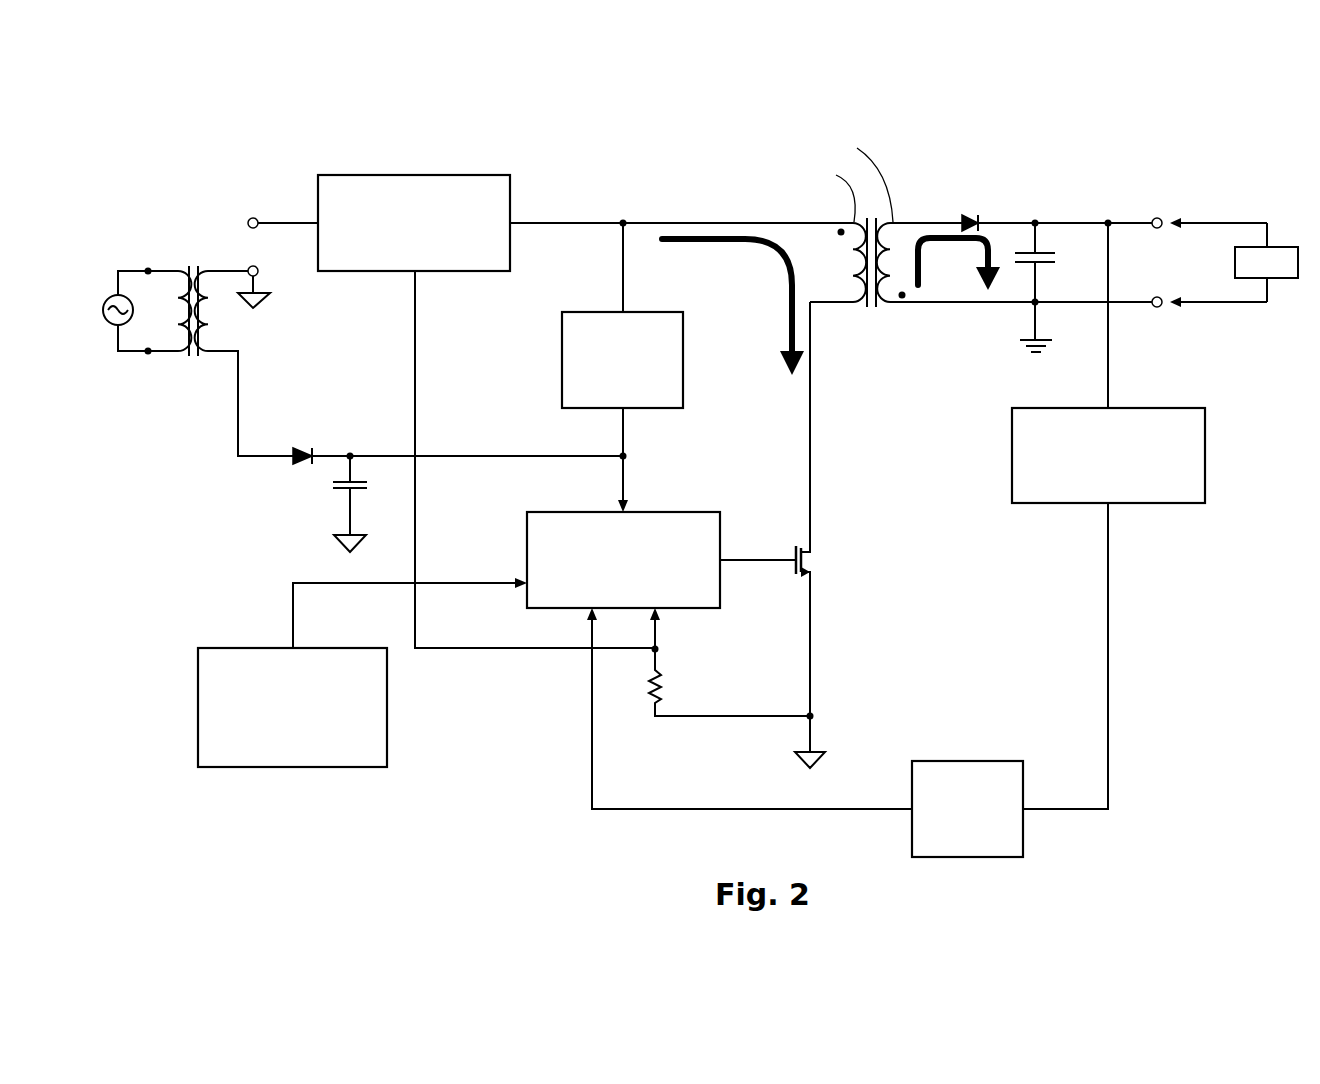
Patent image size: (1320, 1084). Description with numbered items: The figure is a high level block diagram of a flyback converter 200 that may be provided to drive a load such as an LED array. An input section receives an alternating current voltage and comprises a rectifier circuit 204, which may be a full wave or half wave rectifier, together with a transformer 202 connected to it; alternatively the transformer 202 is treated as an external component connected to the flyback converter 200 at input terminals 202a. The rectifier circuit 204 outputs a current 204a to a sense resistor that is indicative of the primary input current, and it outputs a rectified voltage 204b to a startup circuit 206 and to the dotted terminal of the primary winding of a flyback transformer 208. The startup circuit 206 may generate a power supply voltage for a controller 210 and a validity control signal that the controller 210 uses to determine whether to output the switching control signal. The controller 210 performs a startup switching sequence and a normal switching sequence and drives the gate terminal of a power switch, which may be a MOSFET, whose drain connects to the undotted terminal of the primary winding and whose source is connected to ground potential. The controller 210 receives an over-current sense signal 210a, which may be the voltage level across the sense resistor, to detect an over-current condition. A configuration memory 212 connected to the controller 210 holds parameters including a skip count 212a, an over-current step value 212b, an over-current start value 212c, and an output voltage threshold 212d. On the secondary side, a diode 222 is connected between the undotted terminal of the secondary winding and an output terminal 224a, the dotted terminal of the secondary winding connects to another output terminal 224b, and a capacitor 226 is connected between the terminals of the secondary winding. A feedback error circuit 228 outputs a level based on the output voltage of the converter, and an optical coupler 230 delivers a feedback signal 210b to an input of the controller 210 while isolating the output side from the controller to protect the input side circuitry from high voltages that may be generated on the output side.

The flyback converter 200 is at (1172, 110).
The transformer 202 is at (191, 380).
The input terminals 202a is at (252, 266).
The rectifier circuit 204 is at (318, 187).
The current 204a is at (415, 305).
The rectified voltage 204b is at (560, 228).
The startup circuit 206 is at (562, 322).
The transformer 208 is at (880, 322).
The controller 210 is at (527, 522).
The over-current sense signal 210a is at (659, 636).
The feedback signal 210b is at (590, 683).
The configuration memory 212 is at (324, 672).
The skip count 212a is at (200, 670).
The over-current step value 212b is at (200, 695).
The over-current start value 212c is at (200, 720).
The Vout_threshold 212d is at (200, 745).
The diode 222 is at (969, 195).
The output terminal 224a is at (1159, 217).
The output terminal 224b is at (1160, 307).
The capacitor 226 is at (1069, 248).
The feedback error circuit 228 is at (1012, 487).
The optical coupler 230 is at (1025, 838).